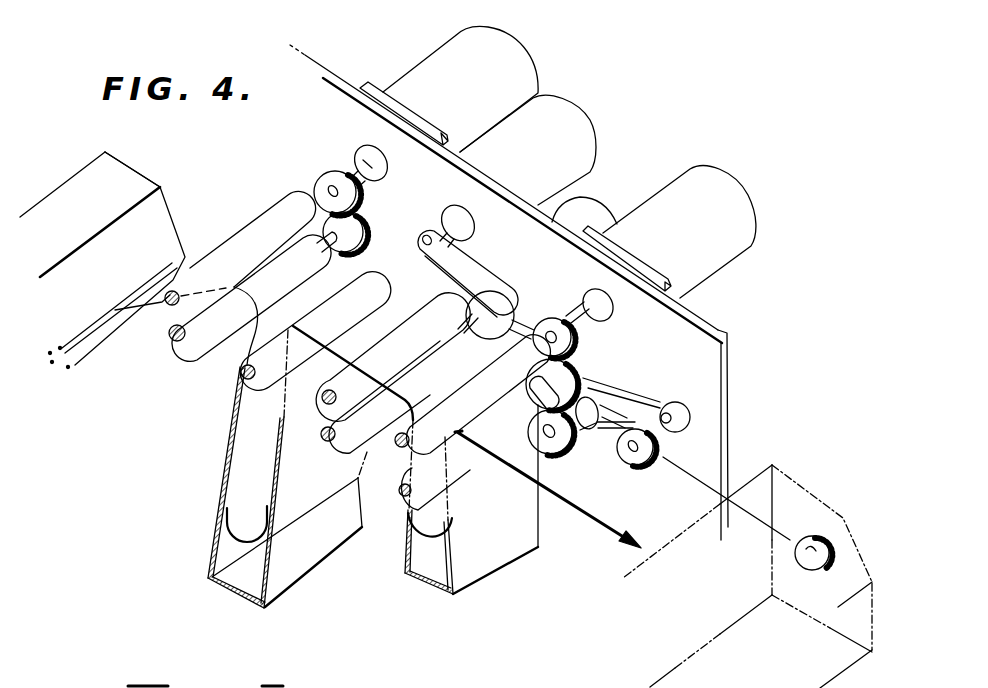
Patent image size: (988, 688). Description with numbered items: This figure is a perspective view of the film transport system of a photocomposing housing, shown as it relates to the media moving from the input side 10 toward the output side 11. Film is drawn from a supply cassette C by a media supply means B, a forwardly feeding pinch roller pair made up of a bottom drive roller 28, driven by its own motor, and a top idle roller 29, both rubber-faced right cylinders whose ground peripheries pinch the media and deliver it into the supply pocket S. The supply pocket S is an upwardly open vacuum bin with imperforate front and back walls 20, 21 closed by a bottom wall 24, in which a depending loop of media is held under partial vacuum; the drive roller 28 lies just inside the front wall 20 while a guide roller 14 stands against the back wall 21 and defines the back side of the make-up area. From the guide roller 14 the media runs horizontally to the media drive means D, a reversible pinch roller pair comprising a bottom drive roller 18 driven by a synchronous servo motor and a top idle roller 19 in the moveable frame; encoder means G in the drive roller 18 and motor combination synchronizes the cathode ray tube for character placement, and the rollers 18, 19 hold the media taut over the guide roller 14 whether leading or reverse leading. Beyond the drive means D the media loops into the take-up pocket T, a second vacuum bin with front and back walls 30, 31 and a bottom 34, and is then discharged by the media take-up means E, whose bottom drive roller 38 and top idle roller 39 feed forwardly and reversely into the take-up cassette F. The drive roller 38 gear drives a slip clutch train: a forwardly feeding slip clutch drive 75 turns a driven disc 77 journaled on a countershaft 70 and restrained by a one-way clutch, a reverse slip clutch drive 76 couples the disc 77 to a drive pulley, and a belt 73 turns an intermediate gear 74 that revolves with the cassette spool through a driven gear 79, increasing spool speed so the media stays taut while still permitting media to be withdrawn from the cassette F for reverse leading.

The input side 10 is at (192, 185).
The output side 11 is at (750, 460).
The guide roller 14 is at (245, 390).
The bottom drive roller 18 is at (347, 448).
The top idle roller 19 is at (420, 313).
The front wall 20 is at (217, 537).
The back wall 21 is at (283, 577).
The bottom wall 24 is at (235, 577).
The bottom drive roller 28 is at (207, 353).
The top idle roller 29 is at (268, 213).
The front wall 30 is at (407, 562).
The back wall 31 is at (496, 548).
The bottom 34 is at (425, 567).
The bottom drive roller 38 is at (468, 458).
The top idle roller 39 is at (522, 310).
The countershaft 70 is at (547, 433).
The belt 73 is at (670, 402).
The intermediate gear 74 is at (641, 460).
The forwardly feeding slip clutch drive 75 is at (588, 428).
The reverse slip clutch drive 76 is at (618, 393).
The driven disc 77 is at (604, 404).
The driven gear 79 is at (810, 567).
The media supply means B is at (528, 66).
The supply cassette C is at (129, 185).
The media drive means D is at (589, 133).
The media take-up means E is at (735, 205).
The take-up cassette F is at (747, 567).
The encoder means G is at (607, 205).
The supply pocket S is at (258, 477).
The take-up pocket T is at (426, 519).